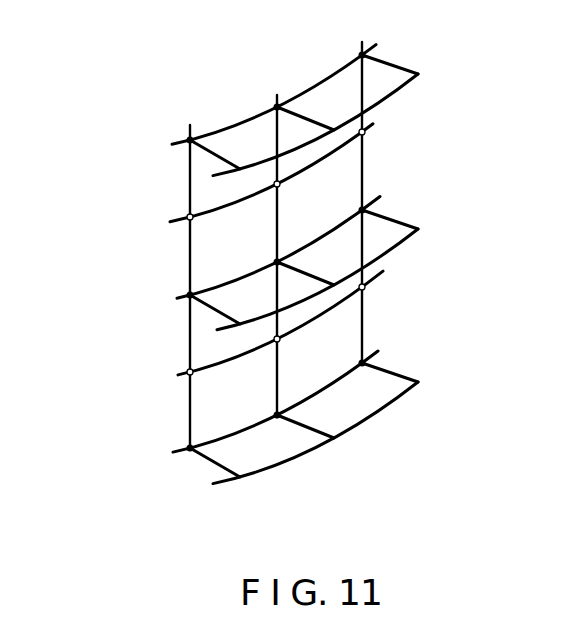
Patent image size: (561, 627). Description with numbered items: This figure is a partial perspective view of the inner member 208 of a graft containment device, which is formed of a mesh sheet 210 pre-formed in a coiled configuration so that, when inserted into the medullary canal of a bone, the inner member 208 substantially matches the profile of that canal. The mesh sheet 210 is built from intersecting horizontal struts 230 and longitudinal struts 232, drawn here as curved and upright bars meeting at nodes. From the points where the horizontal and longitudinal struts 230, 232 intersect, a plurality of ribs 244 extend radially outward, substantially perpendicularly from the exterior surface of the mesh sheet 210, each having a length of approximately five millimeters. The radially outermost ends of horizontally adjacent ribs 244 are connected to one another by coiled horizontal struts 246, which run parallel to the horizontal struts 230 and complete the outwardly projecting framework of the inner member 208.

The inner member 208 is at (118, 104).
The mesh sheet 210 is at (190, 268).
The horizontal struts 230 is at (242, 120).
The longitudinal struts 232 is at (277, 392).
The ribs 244 is at (313, 122).
The coiled horizontal struts 246 is at (388, 253).